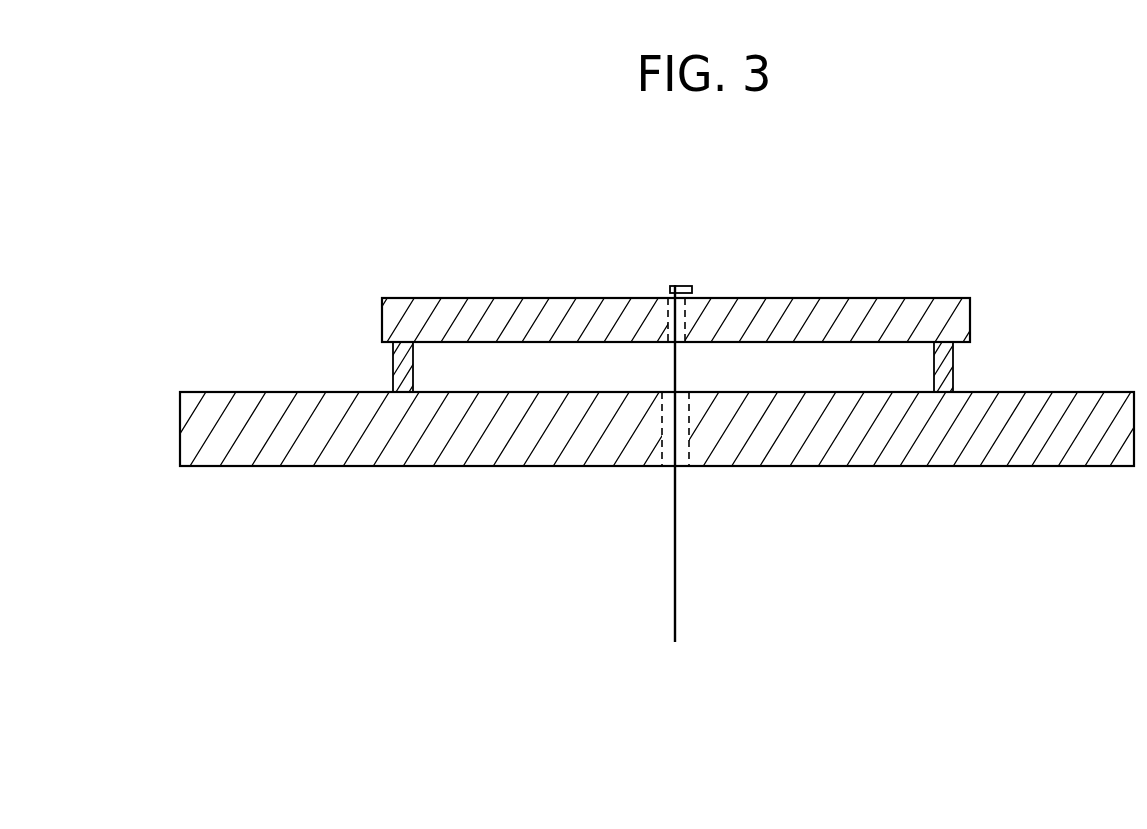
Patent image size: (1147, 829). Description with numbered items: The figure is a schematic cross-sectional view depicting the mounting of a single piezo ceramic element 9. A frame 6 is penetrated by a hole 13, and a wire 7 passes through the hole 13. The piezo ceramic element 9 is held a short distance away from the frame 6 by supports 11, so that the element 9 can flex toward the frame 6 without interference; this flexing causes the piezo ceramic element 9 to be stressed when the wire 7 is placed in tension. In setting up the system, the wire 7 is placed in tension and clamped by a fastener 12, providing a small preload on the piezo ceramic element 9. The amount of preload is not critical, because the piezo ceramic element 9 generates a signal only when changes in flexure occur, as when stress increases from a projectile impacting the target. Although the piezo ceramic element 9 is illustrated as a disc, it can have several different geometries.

The frame 6 is at (1041, 393).
The wire 7 is at (691, 536).
The piezo ceramic element 9 is at (518, 298).
The supports 11 is at (367, 352).
The fastener 12 is at (702, 263).
The hole 13 is at (650, 471).